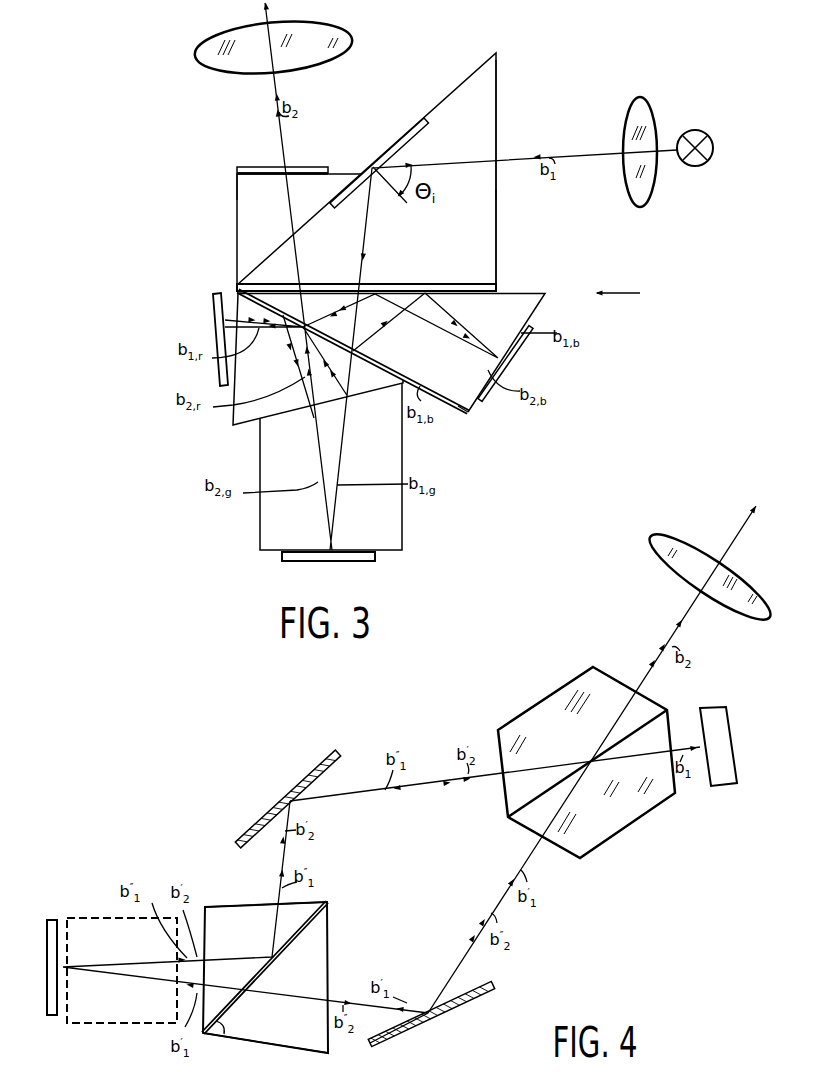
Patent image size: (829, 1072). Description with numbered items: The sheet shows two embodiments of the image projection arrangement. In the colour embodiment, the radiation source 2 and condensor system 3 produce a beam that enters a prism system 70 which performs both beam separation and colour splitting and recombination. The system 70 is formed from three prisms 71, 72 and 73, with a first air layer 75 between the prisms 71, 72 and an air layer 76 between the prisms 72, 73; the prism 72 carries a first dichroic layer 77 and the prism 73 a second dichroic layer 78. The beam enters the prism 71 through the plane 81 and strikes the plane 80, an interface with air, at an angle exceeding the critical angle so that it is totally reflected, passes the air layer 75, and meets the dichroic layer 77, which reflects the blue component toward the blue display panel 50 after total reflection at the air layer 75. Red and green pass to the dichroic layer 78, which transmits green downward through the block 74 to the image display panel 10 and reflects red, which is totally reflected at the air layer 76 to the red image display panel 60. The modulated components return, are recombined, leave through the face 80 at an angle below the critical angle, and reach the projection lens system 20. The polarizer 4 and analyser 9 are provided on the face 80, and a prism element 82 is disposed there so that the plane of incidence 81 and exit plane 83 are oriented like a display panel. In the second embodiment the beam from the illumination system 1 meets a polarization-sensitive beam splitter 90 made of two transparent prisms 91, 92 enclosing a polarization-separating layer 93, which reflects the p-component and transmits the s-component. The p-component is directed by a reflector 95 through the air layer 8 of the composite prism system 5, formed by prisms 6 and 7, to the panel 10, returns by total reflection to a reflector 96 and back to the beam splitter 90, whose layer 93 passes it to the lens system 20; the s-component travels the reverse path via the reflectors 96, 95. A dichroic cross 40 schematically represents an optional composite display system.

In FIG. 4, the illumination system 1 is at (731, 785).
In FIG. 3, the radiation source 2 is at (693, 167).
In FIG. 3, the condensor system 3 is at (647, 193).
In FIG. 3, the polarizer 4 is at (415, 122).
In FIG. 4, the composite prism system 5 is at (341, 882).
In FIG. 4, the transparent prism 6 is at (237, 918).
In FIG. 4, the transparent prism 7 is at (307, 1042).
In FIG. 4, the air layer 8 is at (216, 1027).
In FIG. 3, the analyser 9 is at (258, 171).
In FIG. 3, the image display panel 10 is at (367, 565).
In FIG. 4, the image display panel 10 is at (53, 1020).
In FIG. 3, the projection lens system 20 is at (196, 52).
In FIG. 4, the projection lens system 20 is at (760, 623).
In FIG. 4, the dichroic cross 40 is at (107, 1054).
In FIG. 3, the blue display panel 50 is at (518, 344).
In FIG. 3, the red image display panel 60 is at (217, 313).
In FIG. 3, the prism system 70 is at (650, 302).
In FIG. 3, the prism 71 is at (476, 125).
In FIG. 3, the prism 72 is at (527, 306).
In FIG. 3, the prism 73 is at (362, 380).
In FIG. 3, the exit block 74 is at (385, 528).
In FIG. 3, the first air layer 75 is at (489, 287).
In FIG. 3, the air layer 76 is at (252, 303).
In FIG. 3, the first dichroic layer 77 is at (472, 403).
In FIG. 3, the second dichroic layer 78 is at (278, 417).
In FIG. 3, the plane 80 is at (463, 82).
In FIG. 3, the plane of incidence 81 is at (497, 211).
In FIG. 3, the prism element 82 is at (247, 204).
In FIG. 3, the exit plane 83 is at (250, 178).
In FIG. 4, the polarization-sensitive beam splitter 90 is at (641, 857).
In FIG. 4, the transparent prism 91 is at (587, 842).
In FIG. 4, the transparent prism 92 is at (560, 700).
In FIG. 4, the polarization-separating layer 93 is at (522, 808).
In FIG. 4, the reflector 95 is at (478, 1000).
In FIG. 4, the reflector 96 is at (310, 775).